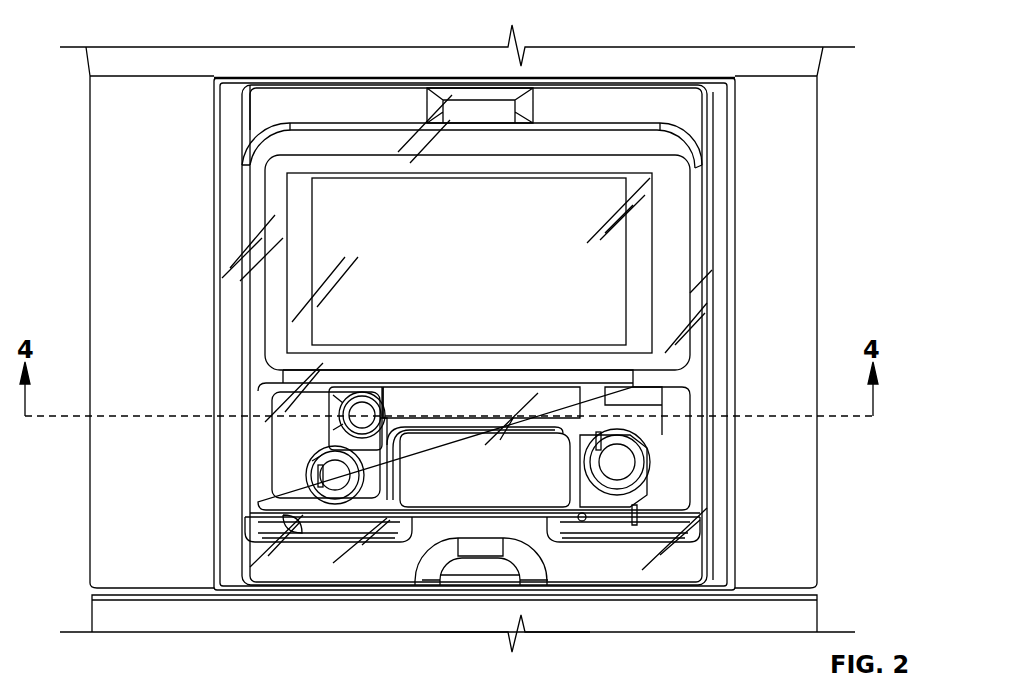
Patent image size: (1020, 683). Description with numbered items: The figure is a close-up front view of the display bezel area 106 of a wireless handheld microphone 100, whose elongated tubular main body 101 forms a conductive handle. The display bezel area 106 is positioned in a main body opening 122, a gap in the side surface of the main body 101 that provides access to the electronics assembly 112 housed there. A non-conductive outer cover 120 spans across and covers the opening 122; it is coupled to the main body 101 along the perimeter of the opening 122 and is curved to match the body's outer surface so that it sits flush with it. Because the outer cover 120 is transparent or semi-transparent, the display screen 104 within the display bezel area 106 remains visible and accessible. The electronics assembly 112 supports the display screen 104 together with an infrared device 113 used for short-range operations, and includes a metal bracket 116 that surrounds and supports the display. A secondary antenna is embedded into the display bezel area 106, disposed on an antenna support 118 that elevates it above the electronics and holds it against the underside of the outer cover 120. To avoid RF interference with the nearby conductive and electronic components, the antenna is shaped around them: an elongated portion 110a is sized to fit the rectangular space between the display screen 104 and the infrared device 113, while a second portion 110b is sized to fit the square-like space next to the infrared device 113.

The wireless handheld microphone 100 is at (817, 313).
The main body 101 is at (755, 613).
The display screen 104 is at (345, 198).
The display bezel area 106 is at (214, 112).
The elongated portion 110a is at (470, 405).
The second portion 110b is at (286, 436).
The electronics assembly 112 is at (563, 660).
The infrared device 113 is at (435, 490).
The bracket 116 is at (265, 148).
The antenna support 118 is at (300, 490).
The outer cover 120 is at (715, 237).
The main body opening 122 is at (213, 350).